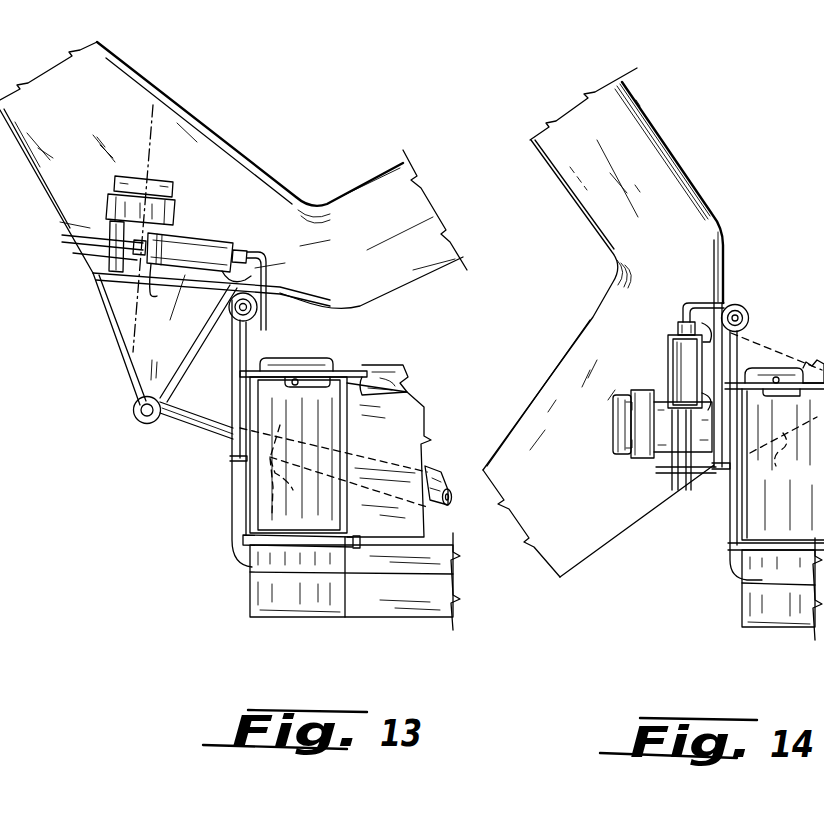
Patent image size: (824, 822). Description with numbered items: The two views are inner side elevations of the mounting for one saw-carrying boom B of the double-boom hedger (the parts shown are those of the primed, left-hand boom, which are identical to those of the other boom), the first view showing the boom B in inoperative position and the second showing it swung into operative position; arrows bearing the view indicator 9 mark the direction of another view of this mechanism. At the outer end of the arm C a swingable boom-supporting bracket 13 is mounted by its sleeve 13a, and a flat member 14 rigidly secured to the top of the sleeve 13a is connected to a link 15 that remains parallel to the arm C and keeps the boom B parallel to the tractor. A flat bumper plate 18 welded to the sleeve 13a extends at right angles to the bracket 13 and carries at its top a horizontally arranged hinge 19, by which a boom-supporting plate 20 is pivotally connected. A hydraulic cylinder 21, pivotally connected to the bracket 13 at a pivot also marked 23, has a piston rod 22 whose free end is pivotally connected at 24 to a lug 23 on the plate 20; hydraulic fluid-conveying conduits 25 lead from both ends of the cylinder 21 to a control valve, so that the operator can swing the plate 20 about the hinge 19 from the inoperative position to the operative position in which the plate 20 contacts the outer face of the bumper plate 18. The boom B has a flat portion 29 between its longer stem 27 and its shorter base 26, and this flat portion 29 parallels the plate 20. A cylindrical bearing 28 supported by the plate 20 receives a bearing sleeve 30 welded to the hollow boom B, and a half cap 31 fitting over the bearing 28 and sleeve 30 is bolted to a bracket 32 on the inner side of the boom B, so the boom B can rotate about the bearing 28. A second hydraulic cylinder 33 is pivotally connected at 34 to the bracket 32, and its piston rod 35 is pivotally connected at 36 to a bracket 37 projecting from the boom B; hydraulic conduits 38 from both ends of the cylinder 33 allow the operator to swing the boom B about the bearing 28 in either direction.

In FIG. 13, the view direction arrow / axis 9 is at (178, 117).
In FIG. 13, the swingable boom-supporting bracket 13 is at (420, 403).
In FIG. 14, the swingable boom-supporting bracket 13 is at (783, 464).
In FIG. 13, the sleeve 13a is at (348, 434).
In FIG. 13, the flat member 14 is at (288, 362).
In FIG. 14, the flat member 14 is at (748, 368).
In FIG. 13, the link 15 is at (410, 383).
In FIG. 14, the link 15 is at (810, 366).
In FIG. 13, the bumper plate 18 is at (232, 492).
In FIG. 14, the bumper plate 18 is at (728, 548).
In FIG. 13, the hinge 19 is at (248, 320).
In FIG. 14, the hinge 19 is at (747, 306).
In FIG. 13, the boom-supporting plate 20 is at (185, 292).
In FIG. 14, the boom-supporting plate 20 is at (715, 486).
In FIG. 13, the hydraulic cylinder 21 is at (440, 476).
In FIG. 13, the piston rod 22 is at (200, 430).
In FIG. 13, the lug 23 is at (148, 366).
In FIG. 14, the lug 23 is at (780, 462).
In FIG. 13, the pivotal connection 24 is at (133, 418).
In FIG. 13, the hydraulic fluid-conveying conduits 25 is at (276, 495).
In FIG. 13, the shorter base of the boom 26 is at (313, 205).
In FIG. 14, the shorter base of the boom 26 is at (638, 103).
In FIG. 13, the longer stem of the boom 27 is at (150, 80).
In FIG. 14, the longer stem of the boom 27 is at (562, 372).
In FIG. 14, the cylindrical bearing 28 is at (655, 402).
In FIG. 13, the flat portion of the boom 29 is at (200, 306).
In FIG. 14, the flat portion of the boom 29 is at (728, 245).
In FIG. 13, the bearing sleeve 30 is at (102, 259).
In FIG. 14, the bearing sleeve 30 is at (660, 478).
In FIG. 13, the half cap 31 is at (180, 210).
In FIG. 14, the half cap 31 is at (640, 460).
In FIG. 13, the bracket 32 is at (163, 178).
In FIG. 14, the bracket 32 is at (690, 300).
In FIG. 13, the hydraulic cylinder 33 is at (197, 242).
In FIG. 14, the hydraulic cylinder 33 is at (667, 352).
In FIG. 13, the pivotal connection 34 is at (246, 254).
In FIG. 14, the pivotal connection 34 is at (676, 326).
In FIG. 13, the piston rod 35 is at (112, 288).
In FIG. 14, the piston rod 35 is at (680, 440).
In FIG. 13, the pivotal connection 36 is at (143, 250).
In FIG. 14, the pivotal connection 36 is at (668, 444).
In FIG. 13, the bracket 37 is at (88, 235).
In FIG. 14, the bracket 37 is at (680, 474).
In FIG. 13, the hydraulic conduits 38 is at (267, 269).
In FIG. 14, the hydraulic conduits 38 is at (724, 300).
In FIG. 13, the boom B is at (182, 110).
In FIG. 14, the boom B is at (703, 193).
In FIG. 13, the arm C is at (374, 602).
In FIG. 14, the arm C is at (790, 610).